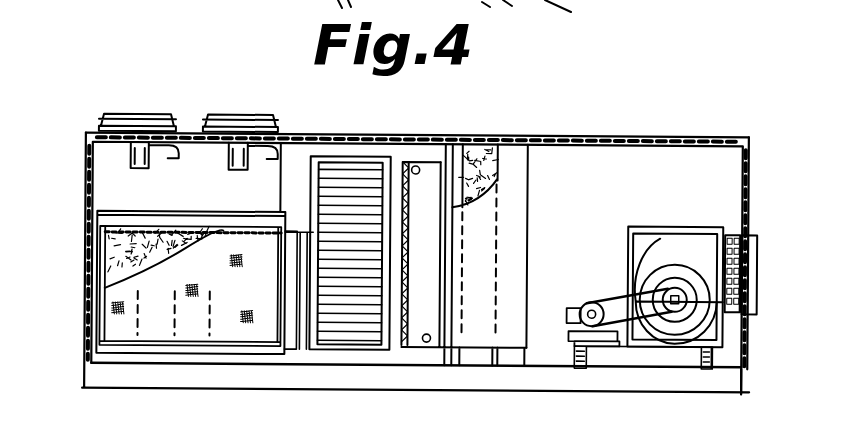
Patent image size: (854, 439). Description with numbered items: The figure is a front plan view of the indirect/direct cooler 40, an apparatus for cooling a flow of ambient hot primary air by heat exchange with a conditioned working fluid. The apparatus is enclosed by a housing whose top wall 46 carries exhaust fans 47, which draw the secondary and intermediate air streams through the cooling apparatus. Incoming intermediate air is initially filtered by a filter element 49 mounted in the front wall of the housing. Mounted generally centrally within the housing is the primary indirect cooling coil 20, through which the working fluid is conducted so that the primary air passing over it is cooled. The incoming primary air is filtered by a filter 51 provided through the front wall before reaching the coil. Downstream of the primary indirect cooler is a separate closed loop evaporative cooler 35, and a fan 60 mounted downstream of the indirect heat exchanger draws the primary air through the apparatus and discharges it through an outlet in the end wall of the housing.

The indirect/direct cooler 40 is at (146, 401).
The top wall 46 is at (631, 118).
The exhaust fans 47 is at (153, 98).
The filter element 49 is at (112, 263).
The filter 51 is at (346, 174).
The primary indirect cooling coil 20 is at (434, 155).
The closed loop evaporative cooler 35 is at (483, 146).
The fan 60 is at (685, 245).